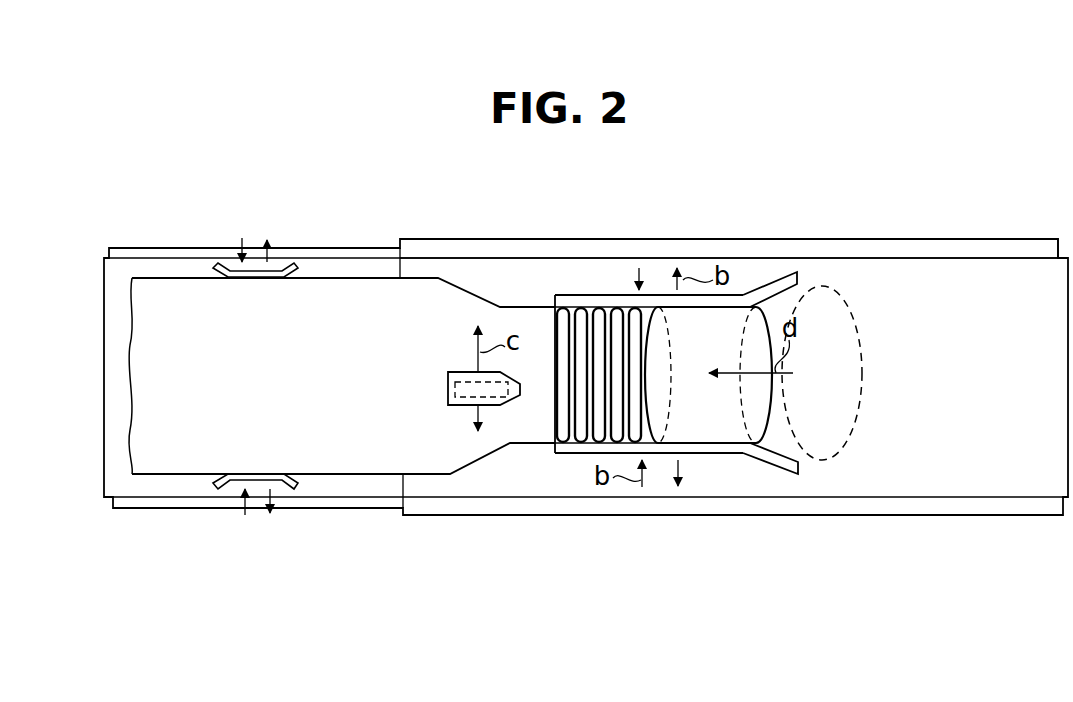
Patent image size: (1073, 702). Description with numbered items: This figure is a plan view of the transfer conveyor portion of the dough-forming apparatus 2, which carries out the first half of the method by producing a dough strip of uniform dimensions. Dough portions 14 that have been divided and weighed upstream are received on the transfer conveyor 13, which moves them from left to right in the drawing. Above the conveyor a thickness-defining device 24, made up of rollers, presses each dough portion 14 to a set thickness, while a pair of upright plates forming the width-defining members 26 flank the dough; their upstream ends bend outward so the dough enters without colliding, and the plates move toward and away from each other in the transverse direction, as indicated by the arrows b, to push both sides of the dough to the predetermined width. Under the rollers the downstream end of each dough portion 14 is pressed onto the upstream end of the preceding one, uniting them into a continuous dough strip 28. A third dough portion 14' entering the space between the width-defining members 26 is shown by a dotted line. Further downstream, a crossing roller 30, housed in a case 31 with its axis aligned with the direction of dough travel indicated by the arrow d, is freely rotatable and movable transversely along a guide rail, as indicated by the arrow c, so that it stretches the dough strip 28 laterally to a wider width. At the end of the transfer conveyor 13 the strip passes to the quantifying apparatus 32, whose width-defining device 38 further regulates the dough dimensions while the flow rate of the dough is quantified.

The apparatus 2 is at (889, 228).
The transfer conveyor 13 is at (973, 280).
The dough portion 14 is at (708, 435).
The displaced position of movable member 14' is at (829, 425).
The thickness-defining device 24 is at (582, 433).
The width-defining members 26 is at (773, 465).
The dough strip 28 is at (535, 427).
The crossing roller 30 is at (448, 392).
The case 31 is at (459, 407).
The quantifying apparatus 32 is at (251, 221).
The width-defining device 38 is at (229, 489).